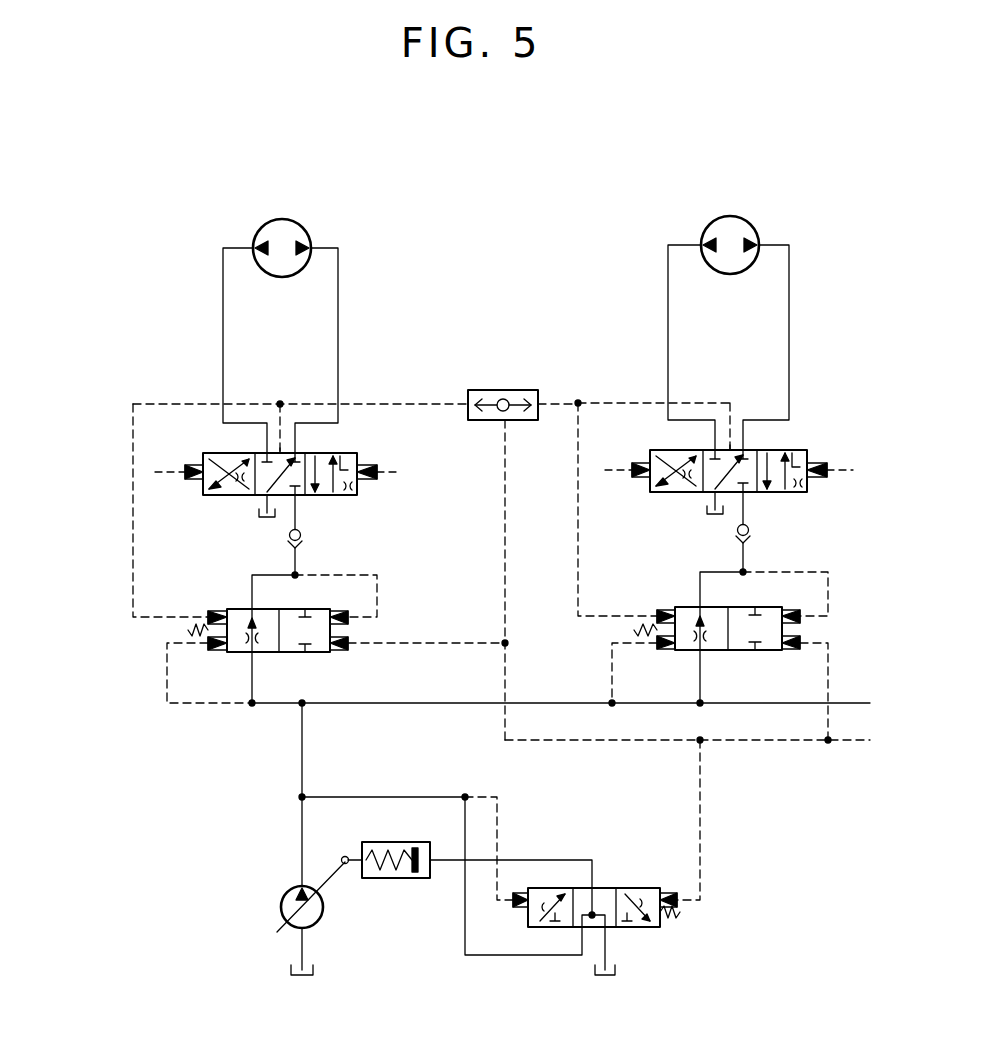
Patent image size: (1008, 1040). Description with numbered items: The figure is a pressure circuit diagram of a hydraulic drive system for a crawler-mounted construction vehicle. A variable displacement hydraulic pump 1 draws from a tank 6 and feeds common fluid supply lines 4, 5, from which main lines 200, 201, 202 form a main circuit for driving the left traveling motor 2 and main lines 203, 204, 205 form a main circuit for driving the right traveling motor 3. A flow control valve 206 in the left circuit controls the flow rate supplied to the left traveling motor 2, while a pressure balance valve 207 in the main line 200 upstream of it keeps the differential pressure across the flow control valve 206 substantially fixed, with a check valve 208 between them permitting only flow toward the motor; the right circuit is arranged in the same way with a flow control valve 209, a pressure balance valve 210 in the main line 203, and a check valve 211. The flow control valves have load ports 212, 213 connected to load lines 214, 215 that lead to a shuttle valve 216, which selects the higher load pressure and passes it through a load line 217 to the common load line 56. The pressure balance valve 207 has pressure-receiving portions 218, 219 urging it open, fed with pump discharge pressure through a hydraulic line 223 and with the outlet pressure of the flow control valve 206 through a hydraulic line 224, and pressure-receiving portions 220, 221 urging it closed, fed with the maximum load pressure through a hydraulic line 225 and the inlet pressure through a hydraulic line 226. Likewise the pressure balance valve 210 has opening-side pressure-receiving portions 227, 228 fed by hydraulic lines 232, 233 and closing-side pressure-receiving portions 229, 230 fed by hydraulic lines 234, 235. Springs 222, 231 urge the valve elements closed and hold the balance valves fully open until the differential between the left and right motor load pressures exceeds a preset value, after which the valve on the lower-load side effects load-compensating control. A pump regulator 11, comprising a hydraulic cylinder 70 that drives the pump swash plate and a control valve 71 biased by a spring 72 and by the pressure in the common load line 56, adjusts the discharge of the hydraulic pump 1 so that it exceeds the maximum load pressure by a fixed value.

The hydraulic pump 1 is at (323, 912).
The left traveling motor 2 is at (283, 219).
The right traveling motor 3 is at (729, 217).
The fluid supply line 4 is at (302, 766).
The fluid supply line 5 is at (440, 705).
The tank 6 is at (316, 971).
The pump regulator 11 is at (575, 833).
The common load line 56 is at (766, 742).
The hydraulic cylinder 70 is at (388, 842).
The control valve 71 is at (620, 888).
The spring 72 is at (680, 914).
The main line 200 is at (297, 568).
The main line 201 is at (338, 330).
The main line 202 is at (223, 330).
The main line 203 is at (745, 564).
The main line 204 is at (789, 328).
The main line 205 is at (668, 332).
The flow control valve 206 is at (357, 488).
The pressure balance valve 207 is at (322, 652).
The check valve 208 is at (302, 534).
The flow control valve 209 is at (650, 487).
The pressure balance valve 210 is at (765, 650).
The check valve 211 is at (750, 533).
The load port 212 is at (280, 453).
The load port 213 is at (720, 448).
The load line 214 is at (379, 404).
The load line 215 is at (610, 404).
The shuttle valve 216 is at (497, 390).
The load line 217 is at (507, 582).
The pressure-receiving portion 218 is at (215, 652).
The pressure-receiving portion 219 is at (212, 611).
The pressure-receiving portion 220 is at (350, 637).
The pressure-receiving portion 221 is at (339, 611).
The spring 222 is at (188, 630).
The hydraulic line 223 is at (185, 705).
The hydraulic line 224 is at (133, 533).
The hydraulic line 225 is at (458, 645).
The hydraulic line 226 is at (380, 600).
The pressure-receiving portion 227 is at (665, 650).
The pressure-receiving portion 228 is at (660, 611).
The pressure-receiving portion 229 is at (802, 636).
The pressure-receiving portion 230 is at (787, 610).
The spring 231 is at (634, 630).
The hydraulic line 232 is at (594, 675).
The hydraulic line 233 is at (578, 538).
The hydraulic line 234 is at (830, 677).
The hydraulic line 235 is at (830, 594).